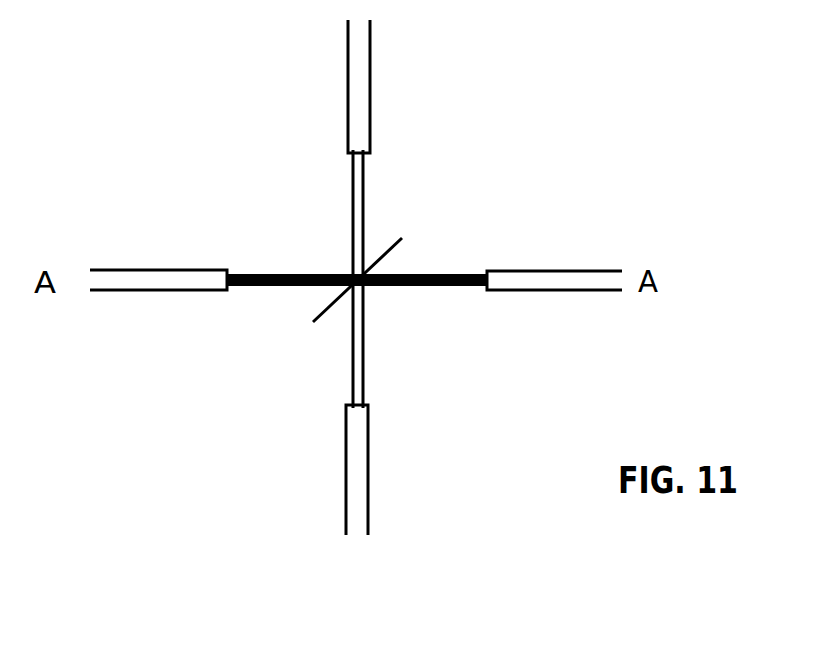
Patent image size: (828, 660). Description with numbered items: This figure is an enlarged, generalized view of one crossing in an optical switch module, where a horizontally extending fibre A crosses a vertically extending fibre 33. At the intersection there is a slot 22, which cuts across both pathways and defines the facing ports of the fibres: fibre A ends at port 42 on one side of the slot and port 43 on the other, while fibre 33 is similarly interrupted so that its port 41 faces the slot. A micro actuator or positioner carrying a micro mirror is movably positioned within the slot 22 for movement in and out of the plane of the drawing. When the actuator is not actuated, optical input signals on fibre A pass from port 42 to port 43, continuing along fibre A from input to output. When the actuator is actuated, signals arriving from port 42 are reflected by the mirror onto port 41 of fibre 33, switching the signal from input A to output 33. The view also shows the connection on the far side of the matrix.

The slot 22 is at (402, 238).
The fibre 33 is at (357, 51).
The port of fibre 33 41 is at (365, 156).
The port of fibre A 42 is at (240, 292).
The port of fibre A 43 is at (478, 289).